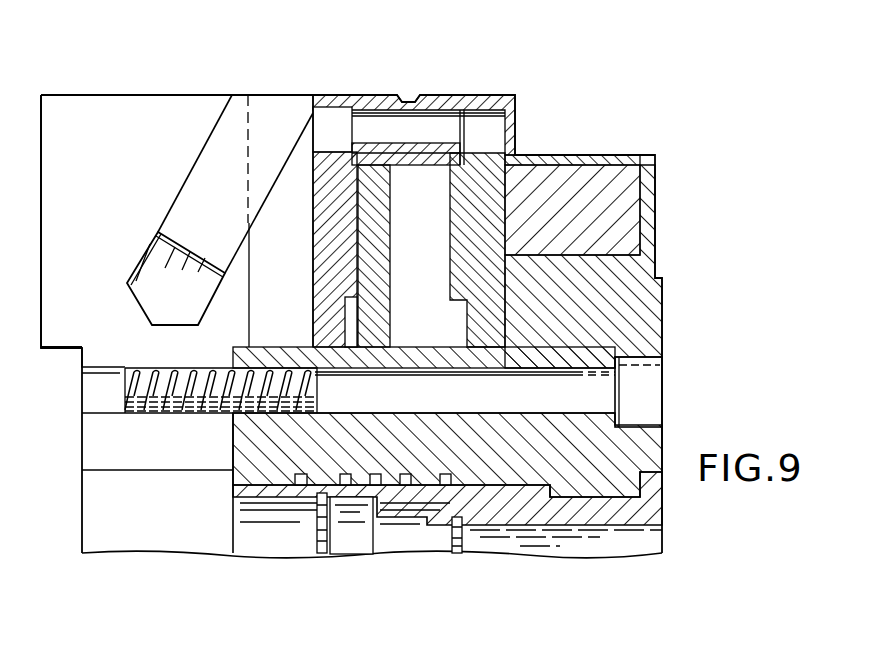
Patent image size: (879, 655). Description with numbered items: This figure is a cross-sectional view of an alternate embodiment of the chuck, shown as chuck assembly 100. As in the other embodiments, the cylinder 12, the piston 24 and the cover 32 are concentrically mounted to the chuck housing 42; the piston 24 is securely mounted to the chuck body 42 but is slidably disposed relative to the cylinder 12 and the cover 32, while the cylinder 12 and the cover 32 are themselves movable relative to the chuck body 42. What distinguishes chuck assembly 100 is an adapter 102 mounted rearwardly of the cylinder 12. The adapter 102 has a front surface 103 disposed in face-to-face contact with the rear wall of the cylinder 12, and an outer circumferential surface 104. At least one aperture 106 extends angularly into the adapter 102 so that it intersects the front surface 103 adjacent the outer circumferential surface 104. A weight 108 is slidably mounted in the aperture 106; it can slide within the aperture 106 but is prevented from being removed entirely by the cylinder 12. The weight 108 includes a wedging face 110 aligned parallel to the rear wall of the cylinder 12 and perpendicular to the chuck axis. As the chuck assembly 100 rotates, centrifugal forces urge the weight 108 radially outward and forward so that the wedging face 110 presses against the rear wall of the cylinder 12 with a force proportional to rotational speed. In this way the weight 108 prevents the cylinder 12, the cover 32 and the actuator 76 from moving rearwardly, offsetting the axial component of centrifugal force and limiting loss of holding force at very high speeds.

The chuck assembly 100 is at (590, 127).
The adapter 102 is at (133, 94).
The front surface 103 is at (252, 260).
The outer circumferential surface 104 is at (80, 94).
The aperture 106 is at (148, 238).
The weight 108 is at (230, 138).
The wedging face 110 is at (326, 98).
The cylinder 12 is at (420, 154).
The piston 24 is at (367, 174).
The cover 32 is at (520, 162).
The chuck housing 42 is at (637, 310).
The actuator 76 is at (622, 202).